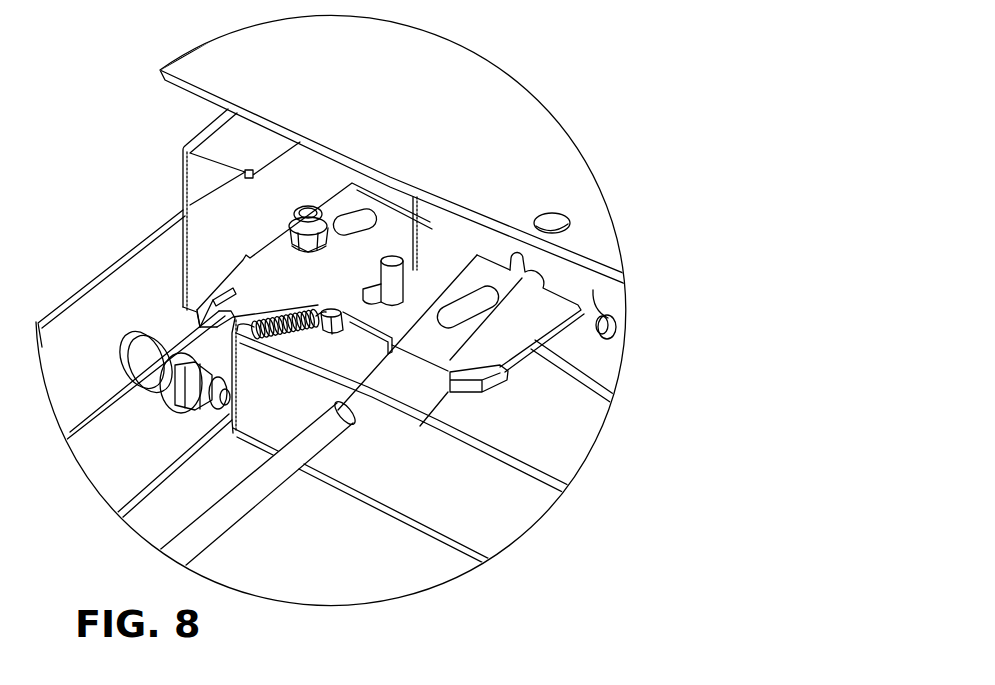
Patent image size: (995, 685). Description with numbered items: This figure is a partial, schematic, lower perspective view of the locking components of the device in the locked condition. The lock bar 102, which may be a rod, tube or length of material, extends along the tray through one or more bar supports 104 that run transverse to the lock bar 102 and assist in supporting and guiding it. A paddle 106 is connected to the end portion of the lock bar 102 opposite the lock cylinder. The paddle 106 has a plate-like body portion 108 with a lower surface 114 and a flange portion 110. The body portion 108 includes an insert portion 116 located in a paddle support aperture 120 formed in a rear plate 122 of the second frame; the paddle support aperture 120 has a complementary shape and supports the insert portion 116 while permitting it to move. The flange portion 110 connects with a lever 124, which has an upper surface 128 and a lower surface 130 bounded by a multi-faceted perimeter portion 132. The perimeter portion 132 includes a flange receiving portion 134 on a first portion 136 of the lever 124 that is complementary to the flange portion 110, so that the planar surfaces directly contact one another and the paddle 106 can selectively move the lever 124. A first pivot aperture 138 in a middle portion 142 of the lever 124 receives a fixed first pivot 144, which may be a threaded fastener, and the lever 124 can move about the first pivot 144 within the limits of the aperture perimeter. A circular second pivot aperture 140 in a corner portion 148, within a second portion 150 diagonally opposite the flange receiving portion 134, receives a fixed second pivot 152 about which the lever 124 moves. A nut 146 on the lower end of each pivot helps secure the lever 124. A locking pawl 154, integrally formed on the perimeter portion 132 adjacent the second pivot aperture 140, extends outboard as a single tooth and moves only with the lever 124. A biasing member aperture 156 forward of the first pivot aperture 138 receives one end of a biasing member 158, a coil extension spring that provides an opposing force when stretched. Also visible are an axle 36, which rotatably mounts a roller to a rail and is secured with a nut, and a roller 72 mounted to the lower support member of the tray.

The axle 36 is at (217, 418).
The roller 72 is at (126, 375).
The lock bar 102 is at (227, 520).
The bar support 104 is at (520, 512).
The paddle 106 is at (525, 283).
The body portion 108 is at (459, 284).
The flange portion 110 is at (440, 398).
The lower surface 114 is at (518, 335).
The insert portion 116 is at (533, 305).
The paddle support aperture 120 is at (494, 262).
The rear plate 122 is at (588, 298).
The lever 124 is at (228, 277).
The upper surface 128 is at (484, 389).
The lower surface 130 is at (228, 287).
The multi-faceted perimeter portion 132 is at (498, 376).
The flange receiving portion 134 is at (464, 389).
The first portion 136 is at (522, 376).
The first pivot aperture 138 is at (396, 306).
The second pivot aperture 140 is at (328, 252).
The middle portion 142 is at (372, 263).
The first pivot 144 is at (396, 258).
The nut 146 is at (298, 252).
The corner portion 148 is at (275, 237).
The second portion 150 is at (265, 276).
The second pivot 152 is at (306, 209).
The locking pawl 154 is at (231, 280).
The biasing member aperture 156 is at (342, 330).
The biasing member 158 is at (297, 345).